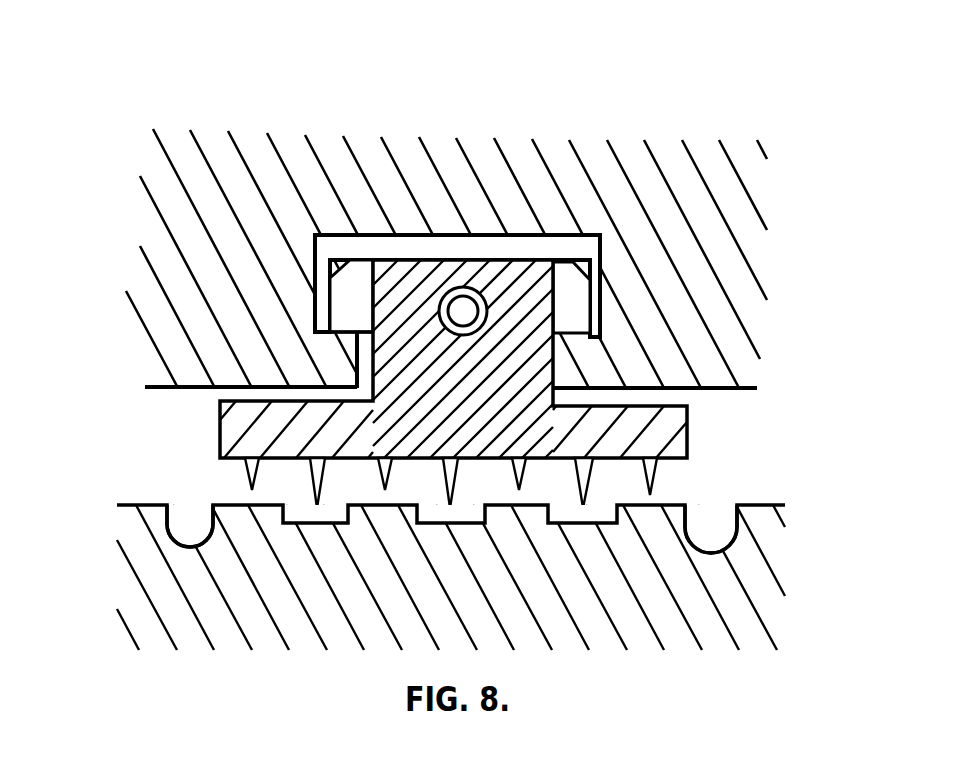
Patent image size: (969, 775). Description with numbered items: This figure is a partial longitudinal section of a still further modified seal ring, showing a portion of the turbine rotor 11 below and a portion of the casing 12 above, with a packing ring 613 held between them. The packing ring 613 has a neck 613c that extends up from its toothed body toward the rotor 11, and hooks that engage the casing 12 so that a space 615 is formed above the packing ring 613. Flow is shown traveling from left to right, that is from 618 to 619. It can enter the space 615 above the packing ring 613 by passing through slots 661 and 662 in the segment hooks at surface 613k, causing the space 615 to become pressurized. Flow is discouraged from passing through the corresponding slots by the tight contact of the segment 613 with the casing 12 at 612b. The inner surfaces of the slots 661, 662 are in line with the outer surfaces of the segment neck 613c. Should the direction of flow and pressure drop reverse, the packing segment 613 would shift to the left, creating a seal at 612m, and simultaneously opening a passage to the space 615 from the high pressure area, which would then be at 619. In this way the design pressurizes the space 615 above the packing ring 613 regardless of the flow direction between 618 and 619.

The casing 12 is at (457, 221).
The rotor 11 is at (415, 556).
The space 615 is at (318, 303).
The slot 661 is at (357, 298).
The slot 662 is at (568, 302).
The packing ring 613 is at (512, 384).
The surface 613k is at (343, 334).
The segment neck 613c is at (465, 358).
The casing surface 612m is at (352, 369).
The casing surface 612b is at (590, 385).
The upstream side 618 is at (175, 505).
The downstream side 619 is at (727, 511).